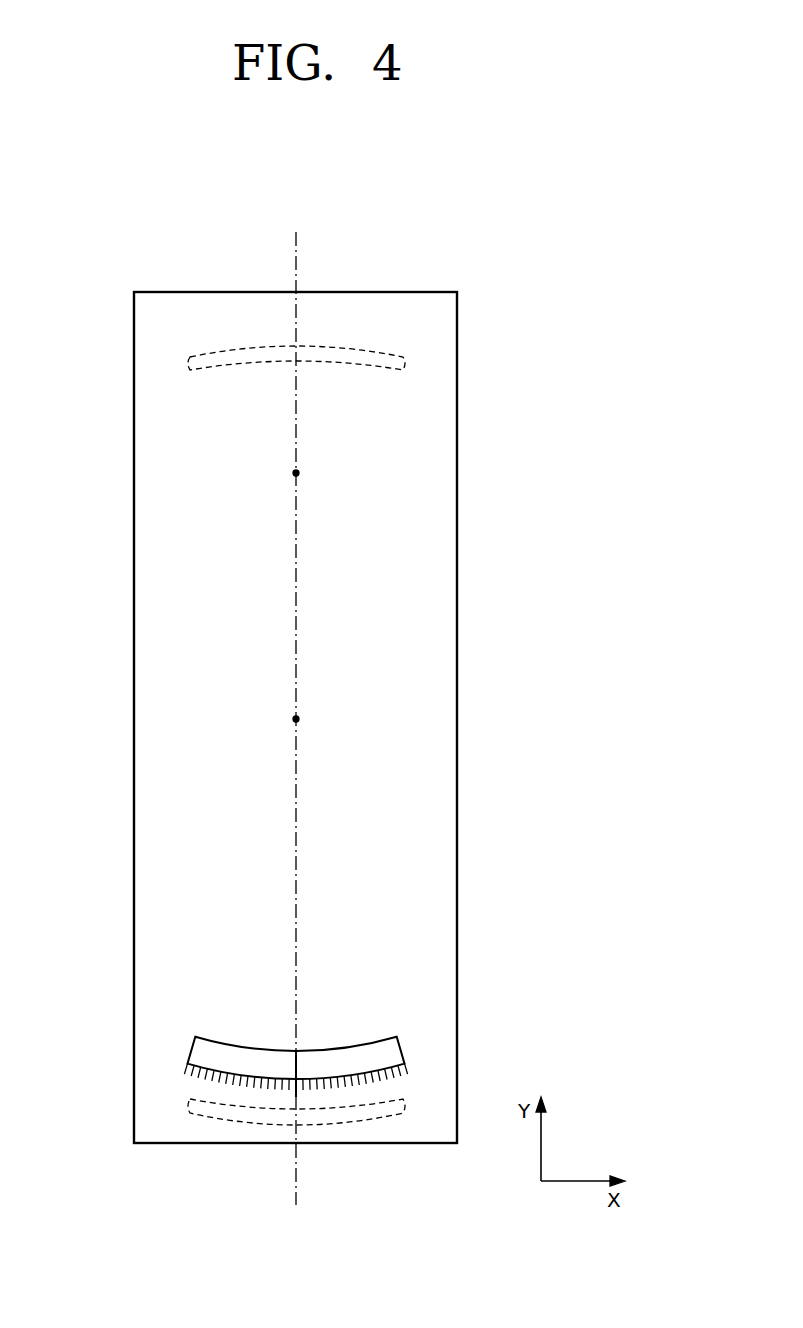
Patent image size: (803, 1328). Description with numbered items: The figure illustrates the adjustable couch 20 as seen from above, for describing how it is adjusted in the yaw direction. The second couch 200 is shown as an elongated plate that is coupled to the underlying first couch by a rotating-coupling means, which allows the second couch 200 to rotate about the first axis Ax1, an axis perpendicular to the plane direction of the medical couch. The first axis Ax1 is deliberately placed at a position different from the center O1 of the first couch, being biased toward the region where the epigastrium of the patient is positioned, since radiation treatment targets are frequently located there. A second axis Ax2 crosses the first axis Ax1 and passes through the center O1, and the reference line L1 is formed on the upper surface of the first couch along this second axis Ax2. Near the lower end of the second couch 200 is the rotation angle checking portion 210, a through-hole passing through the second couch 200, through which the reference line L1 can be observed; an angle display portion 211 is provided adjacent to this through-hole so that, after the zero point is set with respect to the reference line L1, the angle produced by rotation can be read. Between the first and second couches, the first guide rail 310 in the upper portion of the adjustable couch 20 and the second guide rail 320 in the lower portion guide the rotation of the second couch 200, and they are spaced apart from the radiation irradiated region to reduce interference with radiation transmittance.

The adjustable couch 20 is at (533, 239).
The second couch 200 is at (458, 343).
The rotation angle checking portion 210 is at (357, 1109).
The angle display portion 211 is at (371, 1090).
The first guide rail 310 is at (189, 362).
The second guide rail 320 is at (189, 1104).
The first axis Ax1 is at (297, 473).
The second axis Ax2 is at (297, 249).
The center of the first couch O1 is at (297, 719).
The reference line L1 is at (296, 1065).